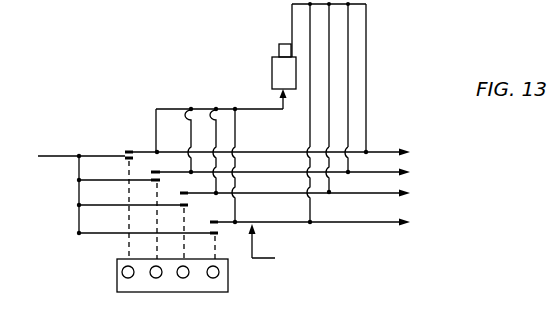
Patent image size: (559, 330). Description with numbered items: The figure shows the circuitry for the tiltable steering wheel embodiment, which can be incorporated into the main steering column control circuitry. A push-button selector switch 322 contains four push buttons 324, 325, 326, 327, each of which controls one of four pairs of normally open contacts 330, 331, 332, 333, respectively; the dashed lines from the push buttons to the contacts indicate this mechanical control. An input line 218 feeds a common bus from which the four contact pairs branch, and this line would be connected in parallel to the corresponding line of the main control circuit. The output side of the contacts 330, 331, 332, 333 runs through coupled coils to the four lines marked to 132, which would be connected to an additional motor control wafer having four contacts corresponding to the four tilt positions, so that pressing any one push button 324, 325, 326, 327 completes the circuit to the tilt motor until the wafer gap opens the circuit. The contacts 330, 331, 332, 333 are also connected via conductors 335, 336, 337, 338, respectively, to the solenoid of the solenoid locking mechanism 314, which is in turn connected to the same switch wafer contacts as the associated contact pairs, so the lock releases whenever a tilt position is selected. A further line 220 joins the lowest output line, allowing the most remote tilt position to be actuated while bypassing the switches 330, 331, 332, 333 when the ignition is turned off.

The line 218 is at (61, 143).
The normally open contacts 330 is at (128, 151).
The normally open contacts 331 is at (162, 179).
The normally open contacts 332 is at (189, 201).
The normally open contacts 333 is at (220, 234).
The conductor 335 is at (156, 108).
The conductor 336 is at (189, 114).
The conductor 337 is at (214, 114).
The conductor 338 is at (237, 115).
The solenoid locking mechanism 314 is at (272, 80).
The line 220 is at (275, 258).
The push-button selector switch 322 is at (228, 291).
The push button 324 is at (125, 278).
The push button 325 is at (151, 277).
The push button 326 is at (179, 277).
The push button 327 is at (208, 277).
The switch wafer connection 132 is at (298, 187).